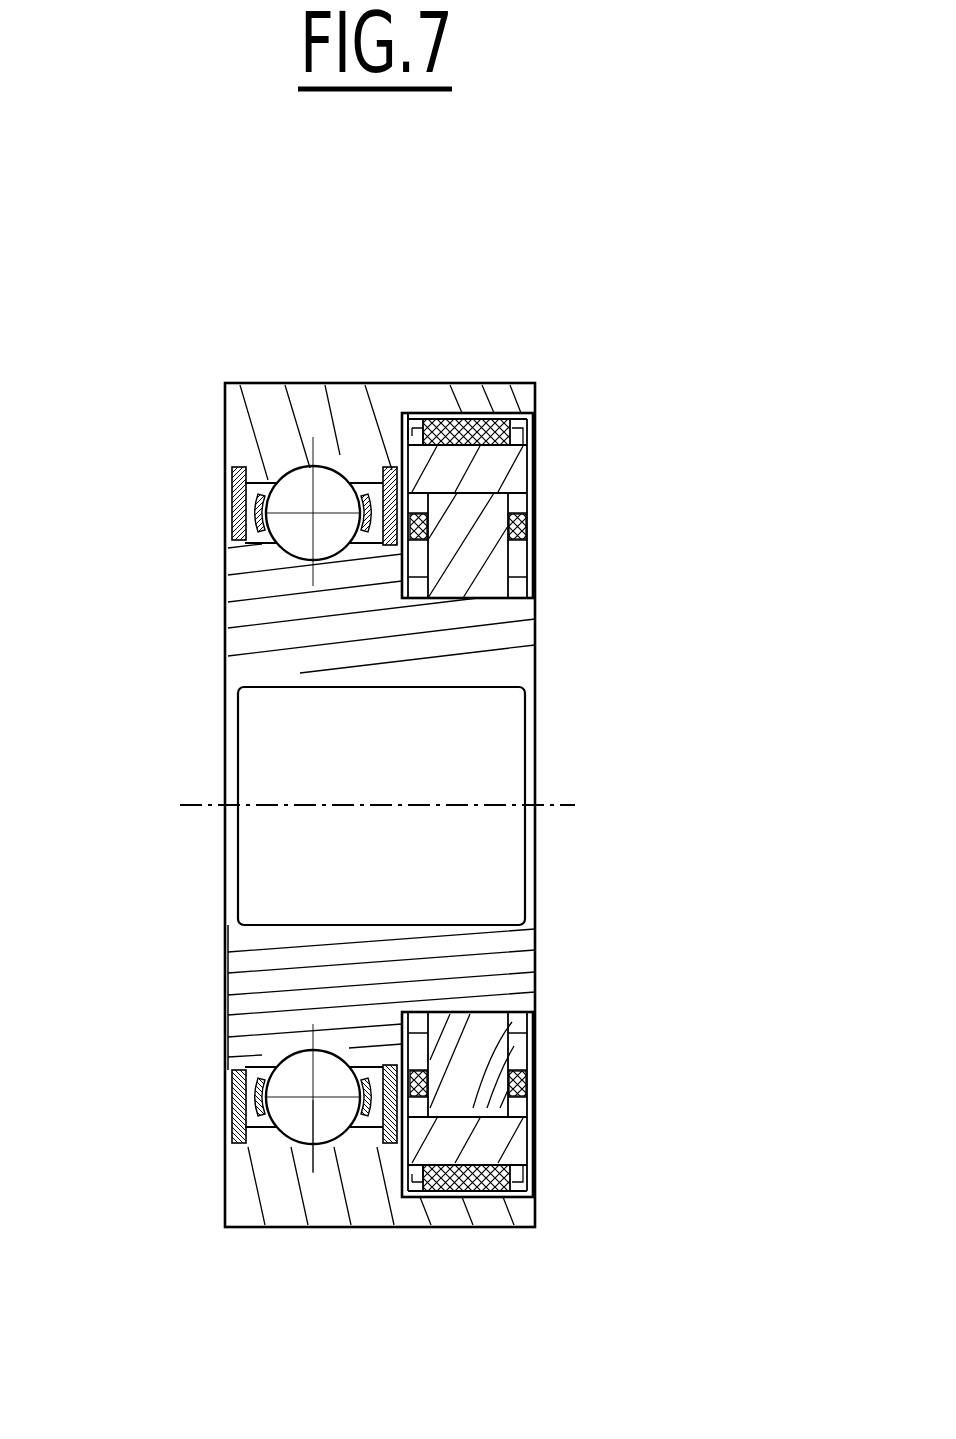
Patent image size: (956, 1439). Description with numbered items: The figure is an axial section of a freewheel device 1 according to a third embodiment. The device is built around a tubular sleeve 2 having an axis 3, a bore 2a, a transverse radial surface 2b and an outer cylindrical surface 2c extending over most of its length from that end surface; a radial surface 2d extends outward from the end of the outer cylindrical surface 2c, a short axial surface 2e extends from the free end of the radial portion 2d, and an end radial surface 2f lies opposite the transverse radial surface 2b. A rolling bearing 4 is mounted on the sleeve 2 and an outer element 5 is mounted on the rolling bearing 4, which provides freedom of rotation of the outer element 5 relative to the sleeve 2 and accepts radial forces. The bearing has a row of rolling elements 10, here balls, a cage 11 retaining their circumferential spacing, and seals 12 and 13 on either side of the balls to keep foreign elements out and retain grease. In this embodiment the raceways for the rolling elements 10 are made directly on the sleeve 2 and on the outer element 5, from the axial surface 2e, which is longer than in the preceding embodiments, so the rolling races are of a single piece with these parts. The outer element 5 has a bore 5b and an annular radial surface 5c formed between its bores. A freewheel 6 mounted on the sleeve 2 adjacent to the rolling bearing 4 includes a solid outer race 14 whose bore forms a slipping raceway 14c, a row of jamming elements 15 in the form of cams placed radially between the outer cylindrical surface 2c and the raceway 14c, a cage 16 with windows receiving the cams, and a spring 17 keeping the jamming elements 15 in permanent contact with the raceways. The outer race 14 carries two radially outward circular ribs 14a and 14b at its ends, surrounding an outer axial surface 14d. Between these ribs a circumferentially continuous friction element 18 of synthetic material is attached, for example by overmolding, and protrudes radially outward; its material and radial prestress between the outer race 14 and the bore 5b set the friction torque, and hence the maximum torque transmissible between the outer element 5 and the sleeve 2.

The freewheel device 1 is at (198, 373).
The tubular sleeve 2 is at (272, 652).
The bore 2a is at (487, 773).
The transverse radial surface 2b is at (535, 663).
The outer cylindrical surface 2c is at (535, 583).
The radial surface 2d is at (440, 598).
The short axial surface 2e is at (230, 1080).
The end radial surface 2f is at (228, 995).
The axis 3 is at (182, 804).
The rolling bearing 4 is at (217, 491).
The outer element 5 is at (267, 408).
The bore 5b is at (535, 438).
The annular radial surface 5c is at (408, 418).
The freewheel 6 is at (552, 505).
The rolling elements 10 is at (327, 492).
The cage 11 is at (237, 540).
The seal 12 is at (228, 525).
The seal 13 is at (355, 548).
The outer race 14 is at (533, 470).
The circular rib 14a is at (410, 1197).
The circular rib 14b is at (523, 1170).
The slipping raceway 14c is at (528, 1052).
The outer axial surface 14d is at (478, 1197).
The jamming elements 15 is at (470, 540).
The cage 16 is at (527, 1083).
The spring 17 is at (508, 1017).
The friction element 18 is at (462, 432).